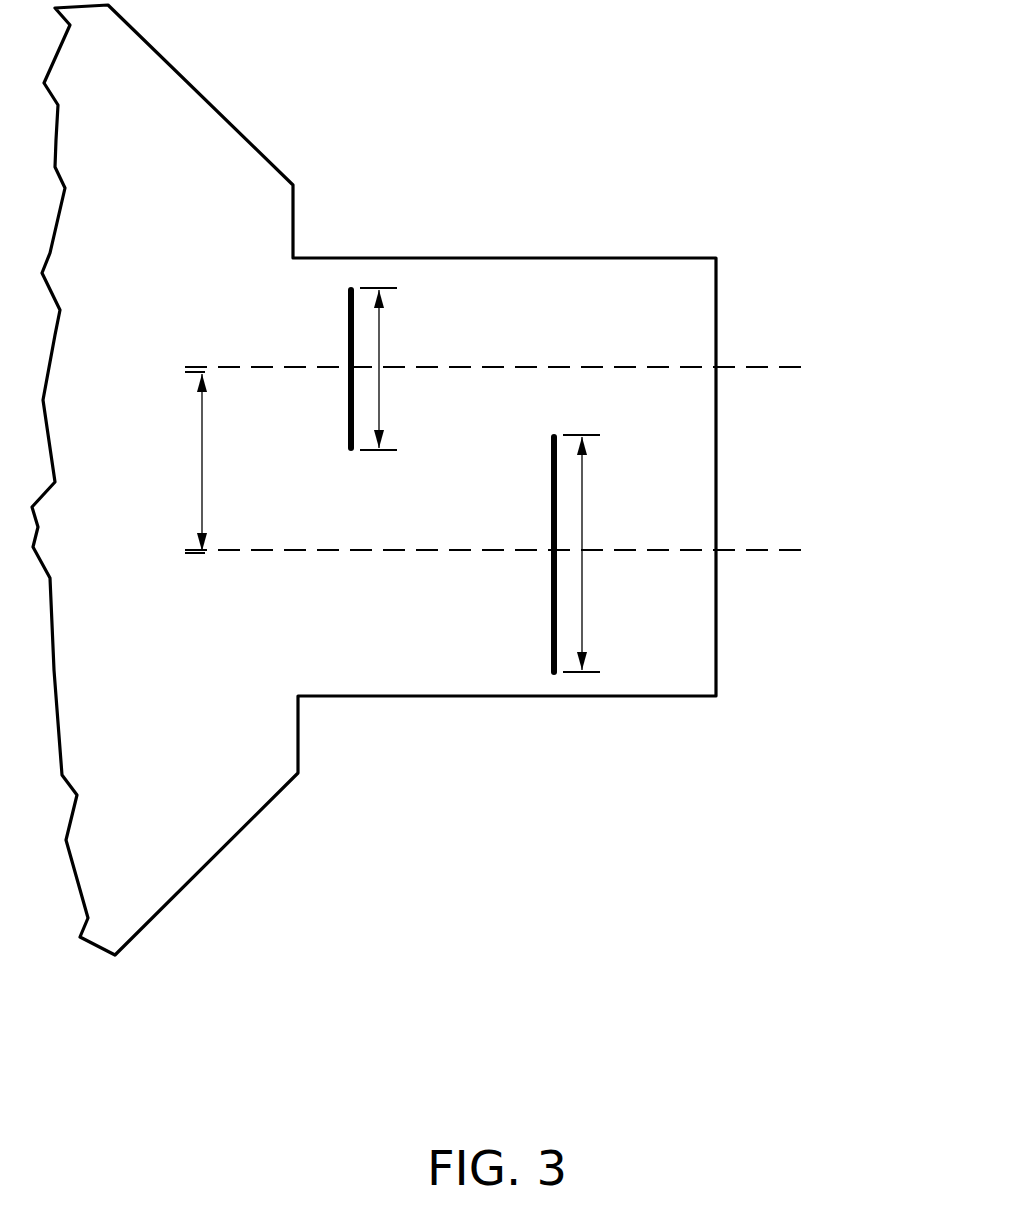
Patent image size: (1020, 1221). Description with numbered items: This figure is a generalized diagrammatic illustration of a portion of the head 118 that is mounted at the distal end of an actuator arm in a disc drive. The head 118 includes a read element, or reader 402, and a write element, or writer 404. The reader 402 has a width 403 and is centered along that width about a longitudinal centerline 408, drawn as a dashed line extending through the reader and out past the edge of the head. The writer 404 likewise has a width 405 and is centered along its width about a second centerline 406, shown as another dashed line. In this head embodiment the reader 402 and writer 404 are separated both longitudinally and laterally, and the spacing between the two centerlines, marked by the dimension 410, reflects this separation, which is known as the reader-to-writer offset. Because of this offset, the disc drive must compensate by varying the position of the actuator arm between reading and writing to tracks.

The head 118 is at (590, 178).
The read element 402 is at (345, 410).
The width of the reader 403 is at (380, 322).
The write element 404 is at (551, 526).
The width of the writer 405 is at (583, 480).
The centerline of the writer 406 is at (752, 547).
The longitudinal centerline of the reader 408 is at (752, 364).
The distance between axis lines 410 is at (202, 465).